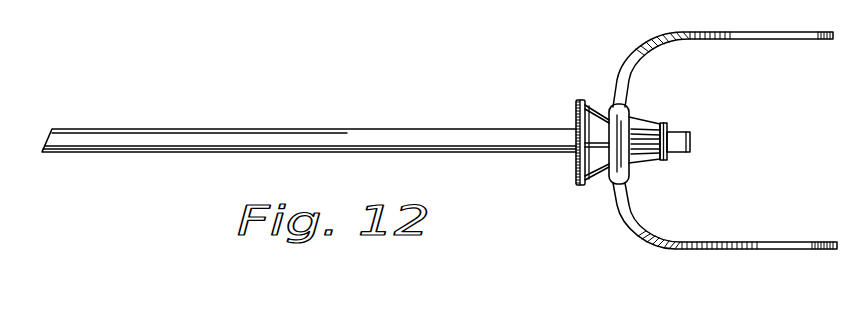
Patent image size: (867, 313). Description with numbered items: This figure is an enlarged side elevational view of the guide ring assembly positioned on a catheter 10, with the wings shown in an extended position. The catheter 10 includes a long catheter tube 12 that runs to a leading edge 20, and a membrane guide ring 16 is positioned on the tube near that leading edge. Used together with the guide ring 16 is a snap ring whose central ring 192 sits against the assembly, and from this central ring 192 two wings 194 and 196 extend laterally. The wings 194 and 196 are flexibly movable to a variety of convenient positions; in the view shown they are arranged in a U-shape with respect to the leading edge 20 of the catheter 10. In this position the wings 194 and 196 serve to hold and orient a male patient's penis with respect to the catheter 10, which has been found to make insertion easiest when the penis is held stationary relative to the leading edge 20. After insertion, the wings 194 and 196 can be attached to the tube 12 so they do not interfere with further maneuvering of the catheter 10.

The non-contaminating catheter 10 is at (314, 92).
The catheter tube 12 is at (502, 128).
The membrane guide ring 16 is at (652, 162).
The leading edge 20 is at (690, 139).
The central ring 192 is at (630, 110).
The wing 194 is at (742, 32).
The wing 196 is at (772, 250).